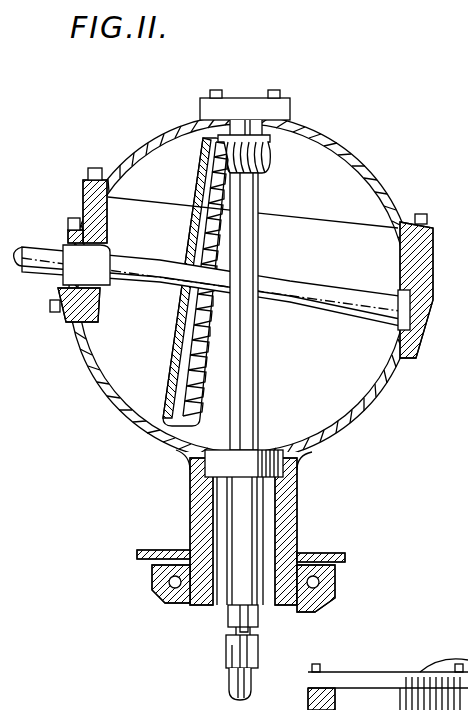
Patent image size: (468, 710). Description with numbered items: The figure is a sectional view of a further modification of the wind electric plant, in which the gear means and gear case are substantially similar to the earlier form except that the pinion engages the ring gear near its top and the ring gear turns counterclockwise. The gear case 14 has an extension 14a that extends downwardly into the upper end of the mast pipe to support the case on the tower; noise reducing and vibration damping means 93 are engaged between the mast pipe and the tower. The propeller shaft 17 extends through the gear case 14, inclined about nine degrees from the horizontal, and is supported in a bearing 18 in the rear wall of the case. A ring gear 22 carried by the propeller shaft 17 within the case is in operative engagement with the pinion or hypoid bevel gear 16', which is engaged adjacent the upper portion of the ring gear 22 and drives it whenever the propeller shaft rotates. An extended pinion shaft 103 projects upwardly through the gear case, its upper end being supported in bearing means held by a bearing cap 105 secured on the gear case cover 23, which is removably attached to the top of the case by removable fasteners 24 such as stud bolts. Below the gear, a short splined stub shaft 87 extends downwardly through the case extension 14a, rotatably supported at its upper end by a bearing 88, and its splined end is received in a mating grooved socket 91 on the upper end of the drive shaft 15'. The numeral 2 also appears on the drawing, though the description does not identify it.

The housing 2 is at (62, 147).
The gear case 14 is at (366, 426).
The extension 14a is at (297, 546).
The drive shaft 15' is at (265, 684).
The hypoid bevel gear 16' is at (270, 162).
The propeller shaft 17 is at (50, 250).
The bearing 18 is at (404, 306).
The ring gear 22 is at (162, 352).
The gear case cover 23 is at (318, 136).
The removable fasteners 24 is at (102, 170).
The stub shaft 87 is at (250, 515).
The bearing 88 is at (262, 460).
The grooved socket 91 is at (260, 652).
The noise reducing and vibration damping means 93 is at (146, 599).
The pinion shaft 103 is at (266, 336).
The bearing cap 105 is at (203, 106).